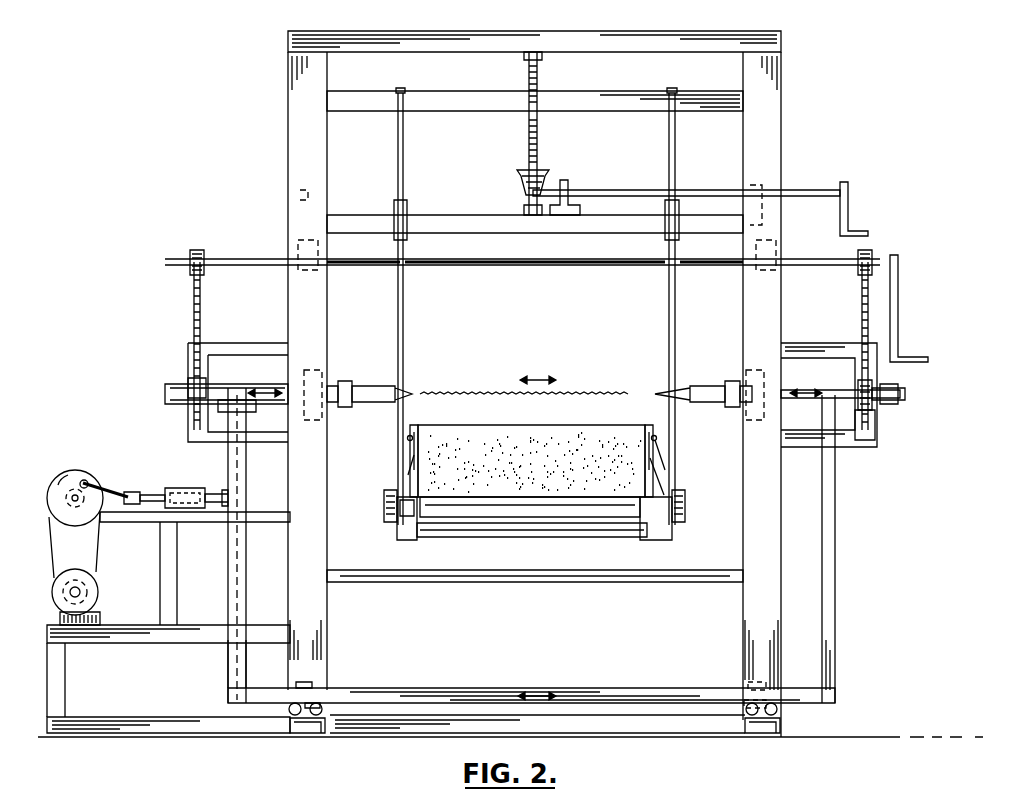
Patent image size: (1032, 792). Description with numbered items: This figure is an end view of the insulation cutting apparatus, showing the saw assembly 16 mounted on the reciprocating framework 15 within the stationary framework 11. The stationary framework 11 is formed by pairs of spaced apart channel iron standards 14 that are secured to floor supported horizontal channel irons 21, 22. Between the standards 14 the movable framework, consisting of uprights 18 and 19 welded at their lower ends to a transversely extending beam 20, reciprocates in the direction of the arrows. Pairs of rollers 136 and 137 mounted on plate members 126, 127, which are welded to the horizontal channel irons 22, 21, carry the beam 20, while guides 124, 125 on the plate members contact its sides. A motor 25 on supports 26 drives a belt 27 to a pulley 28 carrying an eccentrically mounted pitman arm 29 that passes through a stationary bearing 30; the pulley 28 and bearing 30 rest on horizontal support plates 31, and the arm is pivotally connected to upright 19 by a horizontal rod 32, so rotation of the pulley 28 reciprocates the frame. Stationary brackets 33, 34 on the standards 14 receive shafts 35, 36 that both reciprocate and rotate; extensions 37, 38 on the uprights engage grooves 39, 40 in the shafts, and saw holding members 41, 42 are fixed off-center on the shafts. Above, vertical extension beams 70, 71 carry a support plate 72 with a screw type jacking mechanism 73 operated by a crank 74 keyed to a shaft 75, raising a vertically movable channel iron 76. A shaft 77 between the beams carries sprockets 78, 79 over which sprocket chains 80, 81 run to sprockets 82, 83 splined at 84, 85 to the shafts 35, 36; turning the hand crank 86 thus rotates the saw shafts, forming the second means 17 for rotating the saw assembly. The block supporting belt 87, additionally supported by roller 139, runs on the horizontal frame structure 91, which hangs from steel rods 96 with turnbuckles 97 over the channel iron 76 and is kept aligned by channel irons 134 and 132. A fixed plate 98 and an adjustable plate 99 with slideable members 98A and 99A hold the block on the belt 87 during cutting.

The stationary vertically extending framework 11 is at (801, 57).
The channel iron standards 14 is at (292, 494).
The reciprocating framework 15 is at (887, 538).
The saw assembly 16 is at (467, 376).
The second means for rotating the saw assembly 17 is at (904, 291).
The upright channel iron 18 is at (836, 680).
The upright channel iron 19 is at (236, 670).
The transversely extending beam 20 is at (496, 688).
The horizontal channel iron 21 is at (758, 736).
The horizontal channel iron 22 is at (298, 736).
The motor 25 is at (98, 590).
The motor supports 26 is at (140, 644).
The belt 27 is at (95, 548).
The pulley 28 is at (78, 482).
The pitman arm 29 is at (118, 492).
The stationary bearing 30 is at (170, 488).
The horizontal support plates 31 is at (172, 540).
The horizontal rod 32 is at (220, 494).
The stationary bracket 33 is at (334, 384).
The stationary bracket 34 is at (732, 380).
The shaft 35 is at (345, 382).
The shaft 36 is at (744, 406).
The extension 37 is at (828, 420).
The extension 38 is at (244, 414).
The groove 39 is at (838, 390).
The groove 40 is at (230, 388).
The saw holding member 41 is at (352, 404).
The saw holding member 42 is at (712, 386).
The vertical extension beam 70 is at (302, 92).
The vertical extension beam 71 is at (770, 124).
The support plate 72 is at (518, 226).
The jacking mechanism 73 is at (541, 180).
The crank 74 is at (848, 214).
The shaft 75 is at (792, 190).
The vertically movable channel iron 76 is at (590, 106).
The shaft 77 is at (652, 266).
The sprocket 78 is at (200, 250).
The sprocket 79 is at (868, 250).
The sprocket chain 80 is at (202, 320).
The sprocket chain 81 is at (862, 322).
The sprocket 82 is at (190, 382).
The sprocket 83 is at (874, 392).
The spline 84 is at (206, 380).
The spline 85 is at (890, 396).
The hand crank 86 is at (898, 346).
The block supporting belt 87 is at (560, 518).
The horizontal frame structure 91 is at (680, 500).
The steel rods 96 is at (404, 326).
The turnbuckles 97 is at (397, 212).
The fixed plate 98 is at (412, 442).
The slideable member 98A is at (412, 437).
The adjustable plate 99 is at (654, 432).
The slideable member 99A is at (646, 432).
The guide 124 is at (311, 682).
The guide 125 is at (748, 680).
The plate member 126 is at (318, 702).
The plate member 127 is at (748, 700).
The channel iron 132 is at (590, 583).
The channel iron 134 is at (408, 540).
The rollers 136 is at (306, 716).
The rollers 137 is at (786, 712).
The roller 139 is at (484, 536).